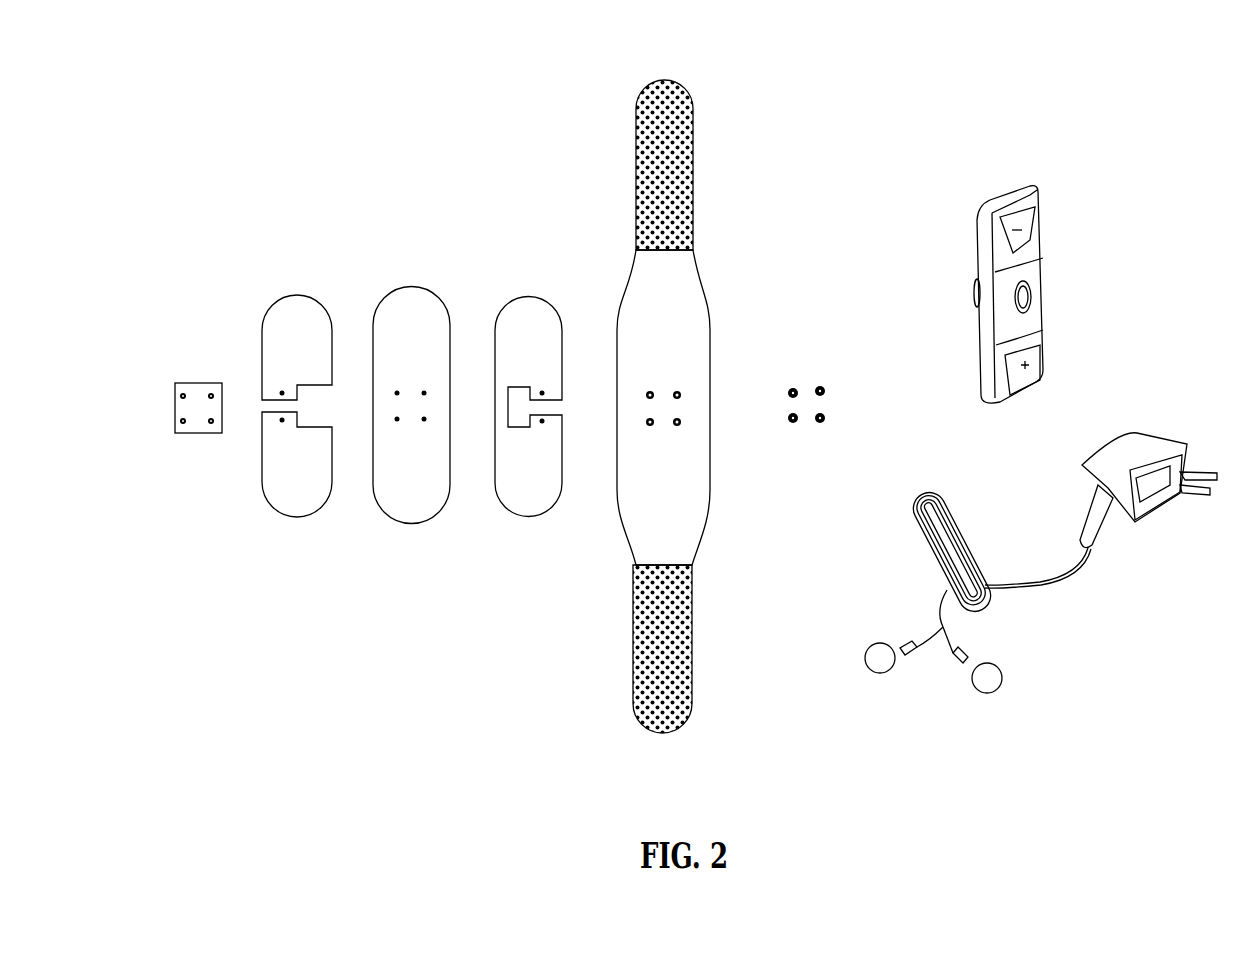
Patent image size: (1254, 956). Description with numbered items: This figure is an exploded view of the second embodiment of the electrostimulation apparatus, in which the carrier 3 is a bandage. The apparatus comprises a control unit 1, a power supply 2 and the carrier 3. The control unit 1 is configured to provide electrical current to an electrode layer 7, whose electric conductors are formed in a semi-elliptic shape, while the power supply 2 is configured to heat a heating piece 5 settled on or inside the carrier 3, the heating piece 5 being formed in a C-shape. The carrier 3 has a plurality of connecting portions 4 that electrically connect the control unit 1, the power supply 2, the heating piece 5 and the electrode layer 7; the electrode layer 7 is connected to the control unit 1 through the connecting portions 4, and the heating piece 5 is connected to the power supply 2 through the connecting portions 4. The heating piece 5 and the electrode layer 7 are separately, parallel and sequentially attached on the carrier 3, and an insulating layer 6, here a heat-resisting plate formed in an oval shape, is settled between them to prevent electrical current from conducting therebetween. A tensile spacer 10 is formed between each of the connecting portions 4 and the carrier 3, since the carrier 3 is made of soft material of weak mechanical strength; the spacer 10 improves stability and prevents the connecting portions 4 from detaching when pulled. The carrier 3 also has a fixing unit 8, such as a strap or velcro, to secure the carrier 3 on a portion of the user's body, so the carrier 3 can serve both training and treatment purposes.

The control unit 1 is at (1026, 185).
The power supply 2 is at (1147, 436).
The carrier 3 is at (712, 308).
The connecting portions 4 is at (811, 377).
The heating piece 5 is at (531, 292).
The insulating layer 6 is at (413, 284).
The electrode layer 7 is at (298, 292).
The fixing unit 8 is at (655, 228).
The tensile spacer 10 is at (198, 383).